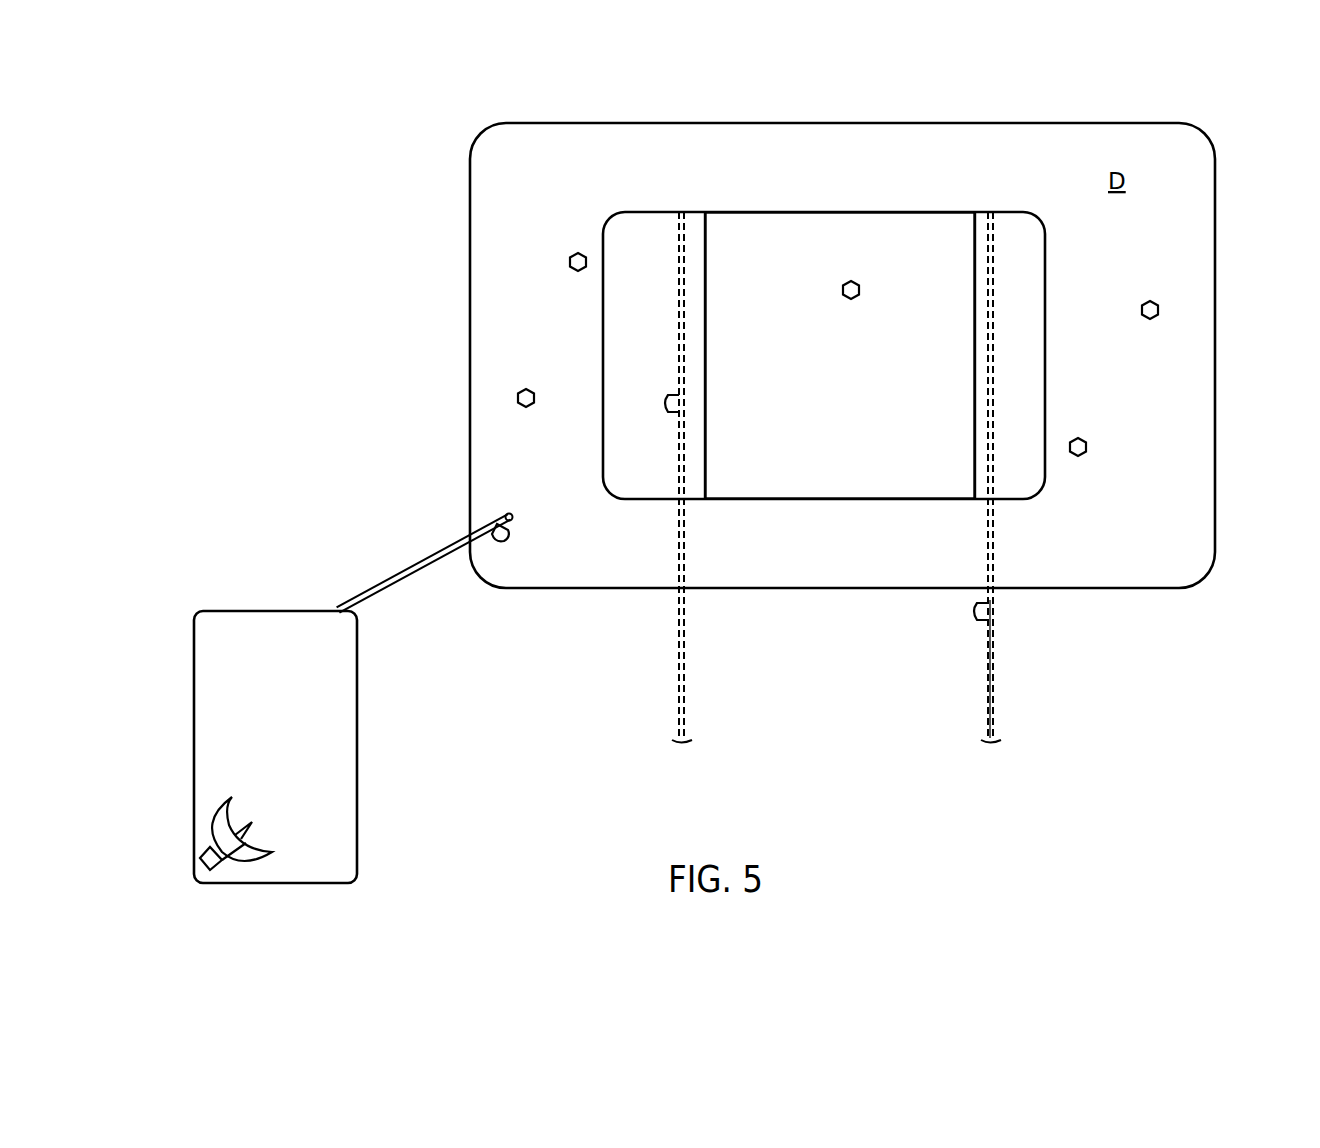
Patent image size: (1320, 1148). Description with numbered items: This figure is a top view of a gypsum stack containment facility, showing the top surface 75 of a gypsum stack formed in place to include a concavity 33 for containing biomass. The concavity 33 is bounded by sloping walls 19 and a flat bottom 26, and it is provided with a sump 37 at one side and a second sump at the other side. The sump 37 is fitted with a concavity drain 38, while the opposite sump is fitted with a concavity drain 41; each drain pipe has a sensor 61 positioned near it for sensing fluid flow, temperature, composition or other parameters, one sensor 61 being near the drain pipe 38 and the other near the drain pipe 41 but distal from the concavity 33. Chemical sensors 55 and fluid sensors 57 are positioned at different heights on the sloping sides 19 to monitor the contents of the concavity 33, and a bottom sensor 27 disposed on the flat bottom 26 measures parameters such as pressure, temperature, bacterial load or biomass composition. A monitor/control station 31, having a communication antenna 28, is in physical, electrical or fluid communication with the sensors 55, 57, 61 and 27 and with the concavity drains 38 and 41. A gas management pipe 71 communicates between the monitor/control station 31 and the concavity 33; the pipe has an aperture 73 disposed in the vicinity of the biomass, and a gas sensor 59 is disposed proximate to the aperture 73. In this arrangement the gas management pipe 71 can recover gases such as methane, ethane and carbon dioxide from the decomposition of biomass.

The sloping walls 19 is at (866, 147).
The flat bottom 26 is at (925, 228).
The bottom sensor 27 is at (853, 281).
The communication antenna 28 is at (207, 840).
The monitor/control station 31 is at (357, 702).
The concavity 33 is at (771, 237).
The sump 37 is at (680, 258).
The concavity drain 38 is at (995, 283).
The concavity drain 41 is at (994, 687).
The chemical sensors 55 is at (528, 391).
The fluid sensors 57 is at (571, 262).
The gas sensor 59 is at (506, 536).
The sensor 61 is at (668, 403).
The gas management pipe 71 is at (386, 578).
The aperture 73 is at (506, 513).
The top surface 75 is at (1148, 620).